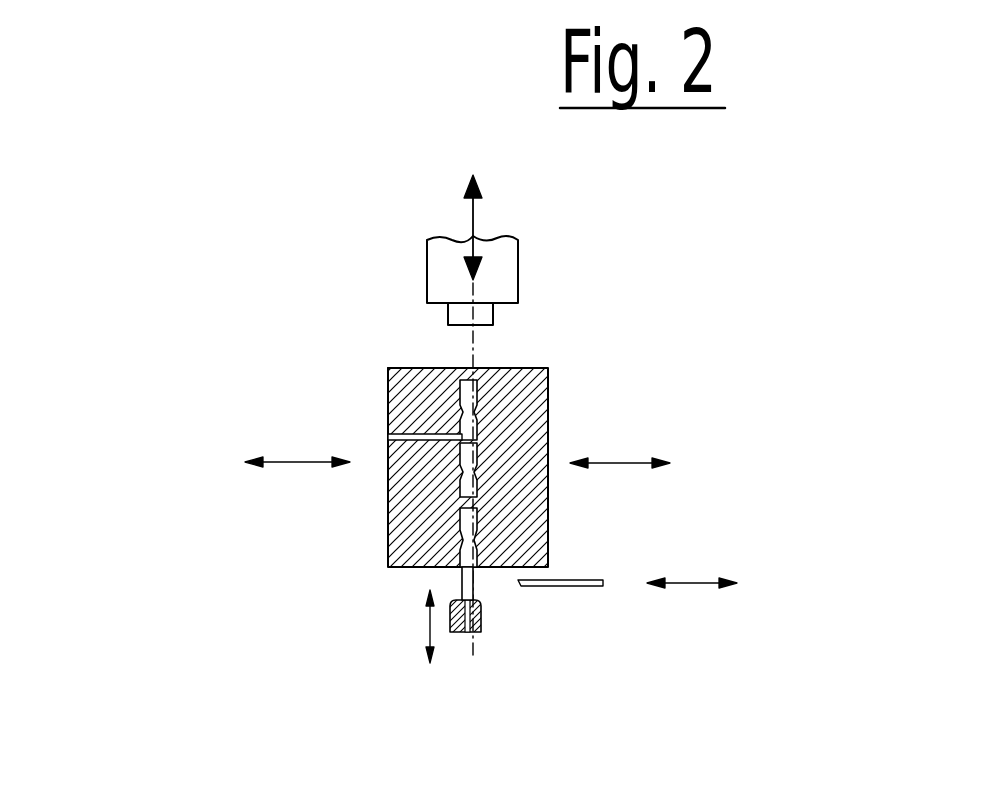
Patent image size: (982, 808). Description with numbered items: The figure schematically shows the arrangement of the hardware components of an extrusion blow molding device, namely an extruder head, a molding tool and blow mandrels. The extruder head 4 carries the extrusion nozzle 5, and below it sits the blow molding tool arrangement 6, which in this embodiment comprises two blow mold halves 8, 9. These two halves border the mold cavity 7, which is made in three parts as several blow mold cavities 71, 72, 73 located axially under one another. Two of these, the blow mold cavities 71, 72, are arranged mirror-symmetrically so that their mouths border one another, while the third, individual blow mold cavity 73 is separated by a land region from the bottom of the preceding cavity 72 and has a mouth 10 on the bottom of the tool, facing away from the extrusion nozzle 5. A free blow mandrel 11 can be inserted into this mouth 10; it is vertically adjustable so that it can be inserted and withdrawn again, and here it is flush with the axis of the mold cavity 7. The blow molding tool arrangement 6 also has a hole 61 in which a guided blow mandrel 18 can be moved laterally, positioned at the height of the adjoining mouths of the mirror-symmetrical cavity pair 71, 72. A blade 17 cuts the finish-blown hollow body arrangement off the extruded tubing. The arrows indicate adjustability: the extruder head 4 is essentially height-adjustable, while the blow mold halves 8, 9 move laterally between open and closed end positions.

The extruder head 4 is at (503, 265).
The extrusion nozzle 5 is at (485, 318).
The blow molding tool arrangement 6 is at (394, 322).
The mold cavity 7 is at (428, 477).
The blow mold half 8 is at (543, 410).
The blow mold half 9 is at (393, 393).
The mouth 10 is at (458, 577).
The free blow mandrel 11 is at (478, 582).
The blade 17 is at (585, 586).
The guided blow mandrel 18 is at (463, 438).
The hole 61 is at (458, 437).
The blow mold cavity 71 is at (475, 398).
The blow mold cavity 72 is at (478, 470).
The individual blow mold cavity 73 is at (455, 535).